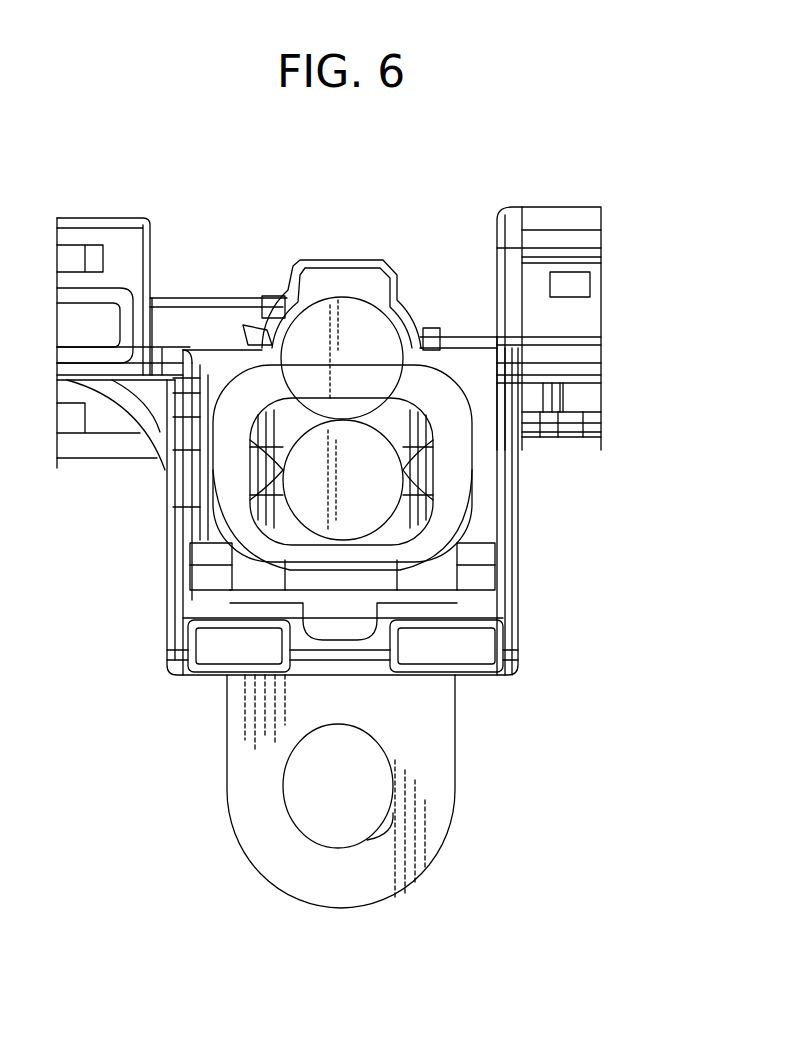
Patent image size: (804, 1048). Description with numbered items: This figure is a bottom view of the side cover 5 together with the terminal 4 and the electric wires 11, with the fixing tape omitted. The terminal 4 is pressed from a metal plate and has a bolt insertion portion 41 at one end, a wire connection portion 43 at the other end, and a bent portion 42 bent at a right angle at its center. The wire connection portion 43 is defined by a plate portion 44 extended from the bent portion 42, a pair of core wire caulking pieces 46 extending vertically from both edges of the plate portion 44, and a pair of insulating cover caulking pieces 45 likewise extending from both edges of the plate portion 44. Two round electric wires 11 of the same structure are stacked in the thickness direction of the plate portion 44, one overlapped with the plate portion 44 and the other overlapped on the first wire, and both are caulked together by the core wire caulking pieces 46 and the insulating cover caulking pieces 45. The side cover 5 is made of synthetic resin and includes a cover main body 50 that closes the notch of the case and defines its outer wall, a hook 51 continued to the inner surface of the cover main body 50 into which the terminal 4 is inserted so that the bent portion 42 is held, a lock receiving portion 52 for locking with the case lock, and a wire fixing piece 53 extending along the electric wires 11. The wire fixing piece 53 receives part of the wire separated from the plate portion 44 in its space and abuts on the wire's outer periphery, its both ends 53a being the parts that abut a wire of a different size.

The terminal 4 is at (465, 753).
The side cover 5 is at (466, 245).
The electric wire 11 is at (342, 463).
The bolt insertion portion 41 is at (400, 815).
The bent portion 42 is at (433, 575).
The wire connection portion 43 is at (475, 493).
The plate portion 44 is at (342, 567).
The insulating cover caulking pieces 45 is at (232, 483).
The core wire caulking pieces 46 is at (270, 470).
The cover main body 50 is at (450, 336).
The hook 51 is at (522, 628).
The lock receiving portion 52 is at (100, 218).
The wire fixing piece 53 is at (349, 323).
The both ends of the wire fixing piece 53a is at (243, 328).